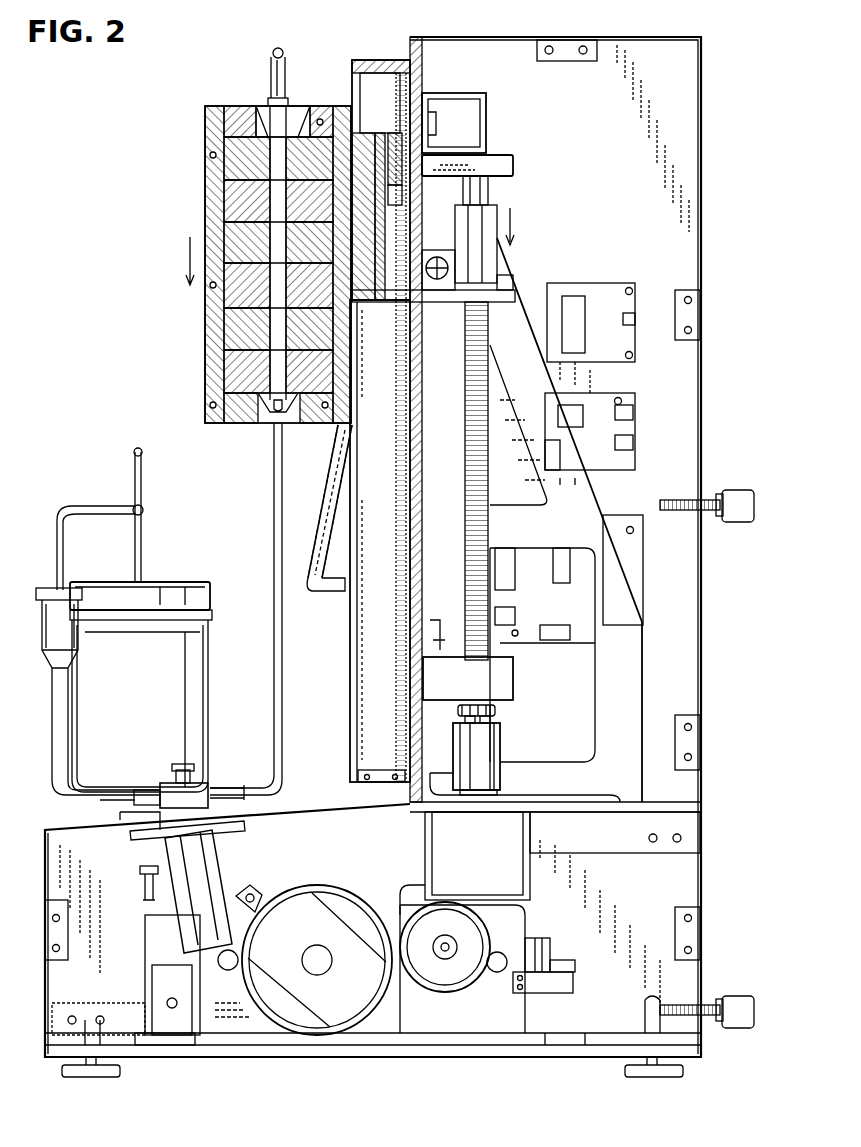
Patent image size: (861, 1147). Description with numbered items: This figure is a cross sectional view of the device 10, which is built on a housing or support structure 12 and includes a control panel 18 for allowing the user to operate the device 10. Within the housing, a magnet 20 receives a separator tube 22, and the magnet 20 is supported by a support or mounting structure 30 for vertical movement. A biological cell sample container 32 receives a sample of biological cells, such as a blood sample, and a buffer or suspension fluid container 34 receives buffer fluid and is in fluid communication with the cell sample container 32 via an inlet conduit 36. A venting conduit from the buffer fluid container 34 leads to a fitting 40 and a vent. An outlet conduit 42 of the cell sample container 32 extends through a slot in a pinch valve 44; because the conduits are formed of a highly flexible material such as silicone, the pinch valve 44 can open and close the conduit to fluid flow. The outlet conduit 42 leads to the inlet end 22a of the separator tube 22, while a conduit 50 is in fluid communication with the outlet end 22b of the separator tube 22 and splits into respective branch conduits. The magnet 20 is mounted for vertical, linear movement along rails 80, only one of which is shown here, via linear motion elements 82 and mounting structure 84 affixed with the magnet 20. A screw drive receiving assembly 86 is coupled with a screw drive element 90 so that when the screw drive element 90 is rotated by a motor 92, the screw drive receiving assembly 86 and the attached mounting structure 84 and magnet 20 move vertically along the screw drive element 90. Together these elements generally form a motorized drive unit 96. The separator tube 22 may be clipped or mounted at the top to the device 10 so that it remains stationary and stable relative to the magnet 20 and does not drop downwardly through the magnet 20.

The device 10 is at (92, 106).
The housing or support structure 12 is at (690, 40).
The control panel 18 is at (338, 474).
The magnet 20 is at (205, 158).
The separator tube 22 is at (286, 322).
The inlet end 22a is at (270, 424).
The outlet end 22b is at (272, 99).
The support or mounting structure 30 is at (333, 46).
The biological cell sample container 32 is at (46, 702).
The buffer or suspension fluid container 34 is at (168, 584).
The inlet conduit 36 is at (58, 522).
The fitting 40 is at (120, 830).
The outlet conduit 42 is at (272, 592).
The pinch valve 44 is at (168, 786).
The conduit 50 is at (276, 51).
The rails 80 is at (398, 88).
The linear motion elements 82 is at (392, 130).
The mounting structure 84 is at (342, 200).
The screw drive receiving assembly 86 is at (500, 300).
The screw drive element 90 is at (490, 523).
The motor 92 is at (496, 742).
The motorized drive unit 96 is at (528, 166).